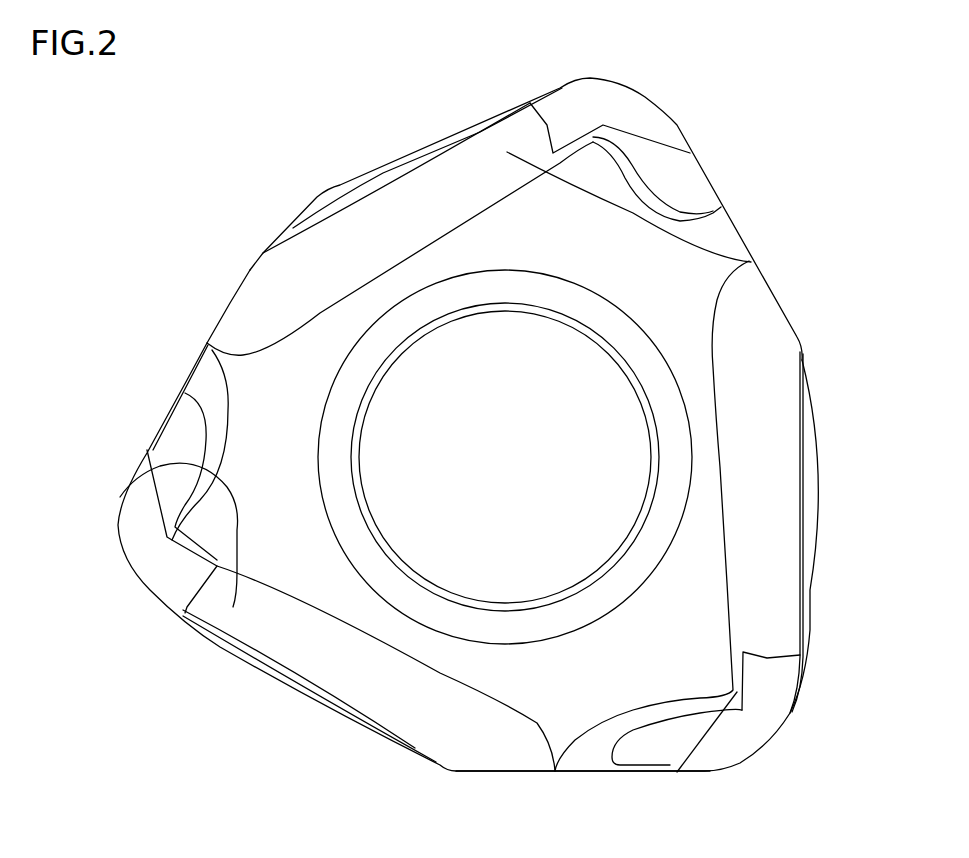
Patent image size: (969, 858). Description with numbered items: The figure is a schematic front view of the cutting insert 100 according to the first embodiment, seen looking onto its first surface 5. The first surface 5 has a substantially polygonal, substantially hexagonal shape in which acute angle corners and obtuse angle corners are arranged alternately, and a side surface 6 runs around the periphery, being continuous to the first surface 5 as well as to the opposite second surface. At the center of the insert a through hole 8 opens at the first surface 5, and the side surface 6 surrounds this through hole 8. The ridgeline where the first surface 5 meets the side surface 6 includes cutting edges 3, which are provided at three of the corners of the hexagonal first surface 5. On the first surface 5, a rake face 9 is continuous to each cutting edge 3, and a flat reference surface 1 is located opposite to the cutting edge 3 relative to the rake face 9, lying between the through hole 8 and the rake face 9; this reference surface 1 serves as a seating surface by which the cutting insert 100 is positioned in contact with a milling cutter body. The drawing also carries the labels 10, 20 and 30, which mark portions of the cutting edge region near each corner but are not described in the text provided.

The cutting insert 100 is at (833, 112).
The reference surface 1 is at (695, 673).
The cutting edge 3 is at (618, 82).
The first surface 5 is at (886, 600).
The side surface 6 is at (670, 772).
The through hole 8 is at (460, 280).
The rake face 9 is at (764, 100).
The corner cutting edge 10 is at (670, 185).
The major cutting edge 20 is at (593, 137).
The minor cutting edge 30 is at (607, 100).